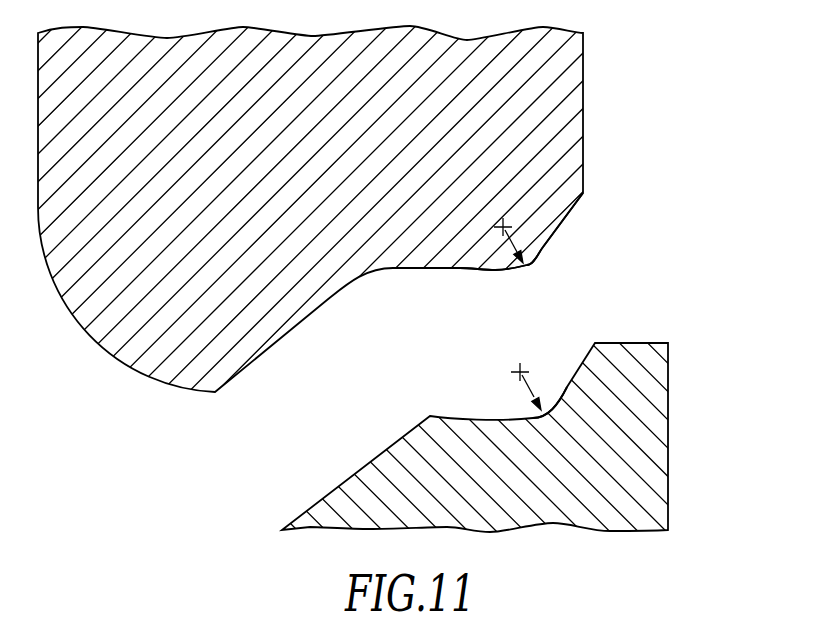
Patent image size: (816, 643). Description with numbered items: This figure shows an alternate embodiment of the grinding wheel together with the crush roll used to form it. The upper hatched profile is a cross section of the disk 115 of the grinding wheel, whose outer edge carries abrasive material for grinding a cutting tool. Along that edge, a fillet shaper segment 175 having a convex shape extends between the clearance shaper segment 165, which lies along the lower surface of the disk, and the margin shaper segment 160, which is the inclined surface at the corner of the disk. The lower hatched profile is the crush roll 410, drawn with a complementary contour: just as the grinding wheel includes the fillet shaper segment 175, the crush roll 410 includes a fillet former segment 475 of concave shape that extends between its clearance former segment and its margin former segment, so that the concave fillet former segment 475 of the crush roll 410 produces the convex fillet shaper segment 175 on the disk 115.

The disk 115 is at (583, 120).
The margin shaper segment 160 is at (578, 201).
The fillet shaper segment 175 is at (530, 262).
The clearance shaper segment 165 is at (463, 270).
The crush roll 410 is at (676, 388).
The fillet former segment 475 is at (546, 407).